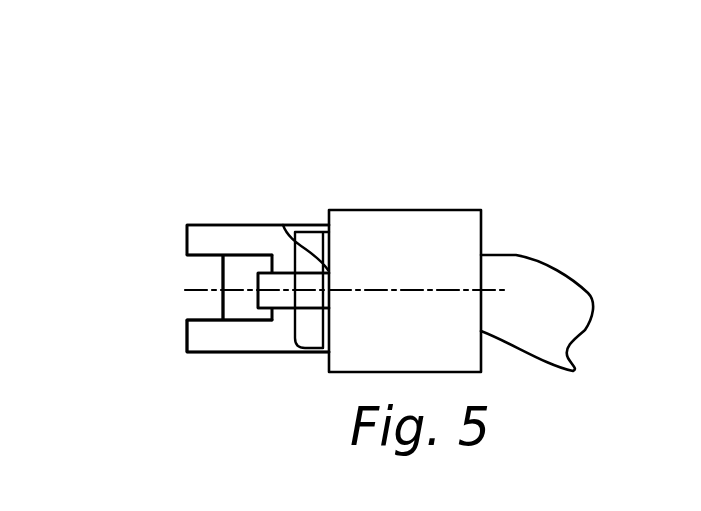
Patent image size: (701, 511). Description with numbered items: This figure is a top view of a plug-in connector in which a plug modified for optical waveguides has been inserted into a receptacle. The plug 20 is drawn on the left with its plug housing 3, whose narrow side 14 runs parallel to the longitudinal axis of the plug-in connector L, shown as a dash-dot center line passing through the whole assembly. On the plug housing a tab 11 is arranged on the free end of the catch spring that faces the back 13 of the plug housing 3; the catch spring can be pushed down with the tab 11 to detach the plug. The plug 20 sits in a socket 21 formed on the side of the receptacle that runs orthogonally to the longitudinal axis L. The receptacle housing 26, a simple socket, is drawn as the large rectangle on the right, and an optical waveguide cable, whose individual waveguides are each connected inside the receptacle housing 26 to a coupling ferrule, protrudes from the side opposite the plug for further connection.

The RJ-45 plug housing 3 is at (253, 225).
The tab 11 is at (268, 298).
The back of the RJ-45 plug housing 13 is at (185, 335).
The narrow side 14 is at (187, 242).
The plug 20 is at (223, 255).
The socket 21 is at (283, 225).
The receptacle housing 26 is at (408, 235).
The longitudinal axis of the plug-in connector L is at (193, 290).